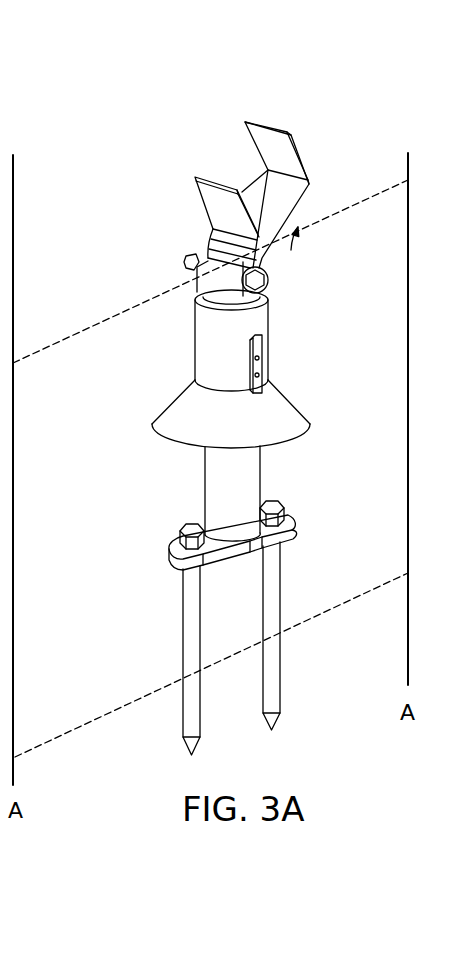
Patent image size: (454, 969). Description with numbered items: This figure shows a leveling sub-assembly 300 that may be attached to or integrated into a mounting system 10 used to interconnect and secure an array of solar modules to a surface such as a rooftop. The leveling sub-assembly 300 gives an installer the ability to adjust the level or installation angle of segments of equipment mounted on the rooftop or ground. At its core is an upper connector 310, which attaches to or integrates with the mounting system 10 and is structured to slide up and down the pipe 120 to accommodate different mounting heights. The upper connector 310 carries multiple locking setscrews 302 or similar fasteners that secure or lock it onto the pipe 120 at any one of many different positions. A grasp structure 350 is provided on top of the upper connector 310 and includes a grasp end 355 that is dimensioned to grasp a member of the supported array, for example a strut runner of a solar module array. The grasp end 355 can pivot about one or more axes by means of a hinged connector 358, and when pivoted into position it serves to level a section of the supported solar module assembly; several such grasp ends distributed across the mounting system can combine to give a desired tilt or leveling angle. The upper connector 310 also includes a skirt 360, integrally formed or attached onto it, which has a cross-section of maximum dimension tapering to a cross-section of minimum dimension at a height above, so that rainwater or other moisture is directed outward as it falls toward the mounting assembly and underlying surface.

The leveling sub-assembly 300 is at (160, 298).
The upper connector 310 is at (205, 344).
The mounting system 10 is at (267, 342).
The locking setscrews 302 is at (262, 360).
The skirt 360 is at (288, 425).
The pipe 120 is at (247, 486).
The grasp structure 350 is at (322, 140).
The grasp end 355 is at (216, 176).
The hinged connector 358 is at (268, 283).